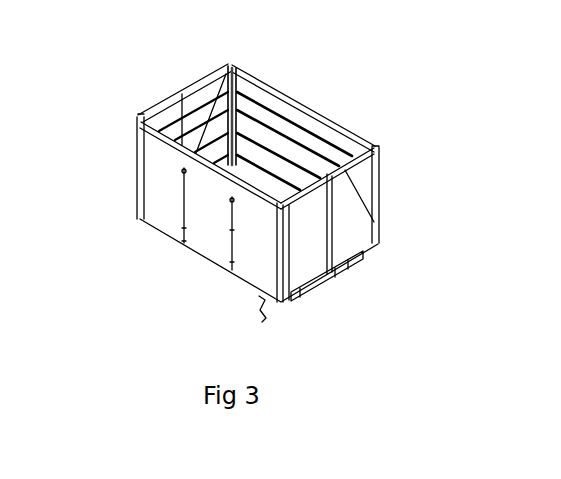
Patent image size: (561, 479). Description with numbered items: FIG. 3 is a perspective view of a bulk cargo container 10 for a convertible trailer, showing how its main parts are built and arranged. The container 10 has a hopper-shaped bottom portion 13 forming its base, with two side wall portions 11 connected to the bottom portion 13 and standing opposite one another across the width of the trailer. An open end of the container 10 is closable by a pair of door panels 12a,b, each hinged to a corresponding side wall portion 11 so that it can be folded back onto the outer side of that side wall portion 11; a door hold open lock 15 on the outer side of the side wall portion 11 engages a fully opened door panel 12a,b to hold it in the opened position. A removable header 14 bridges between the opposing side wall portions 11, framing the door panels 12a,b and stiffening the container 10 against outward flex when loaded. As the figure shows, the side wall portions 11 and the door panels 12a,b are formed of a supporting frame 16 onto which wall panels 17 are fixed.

The container 10 is at (281, 194).
The side wall portion 11 is at (269, 175).
The door panels 12a,b is at (190, 80).
The bottom portion 13 is at (301, 303).
The removable header 14 is at (177, 98).
The door hold open lock 15 is at (182, 206).
The supporting frame 16 is at (278, 114).
The wall panel 17 is at (309, 127).